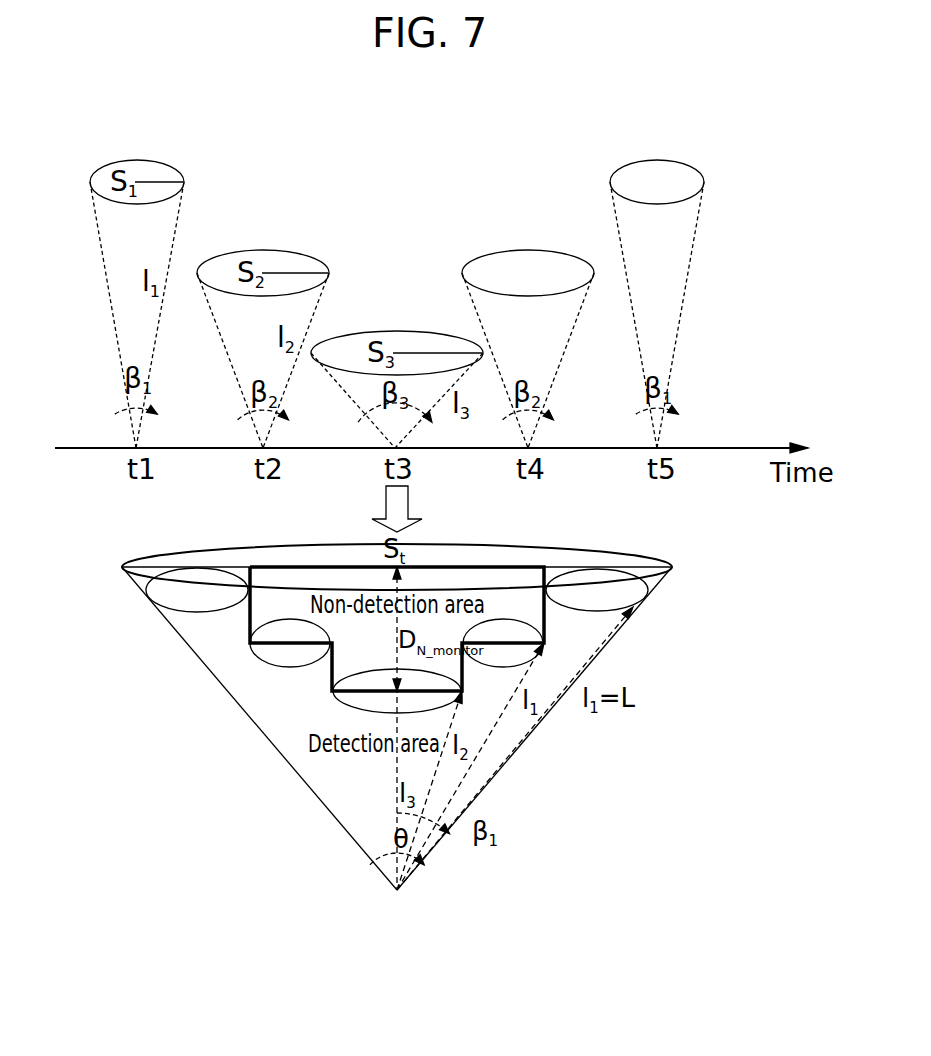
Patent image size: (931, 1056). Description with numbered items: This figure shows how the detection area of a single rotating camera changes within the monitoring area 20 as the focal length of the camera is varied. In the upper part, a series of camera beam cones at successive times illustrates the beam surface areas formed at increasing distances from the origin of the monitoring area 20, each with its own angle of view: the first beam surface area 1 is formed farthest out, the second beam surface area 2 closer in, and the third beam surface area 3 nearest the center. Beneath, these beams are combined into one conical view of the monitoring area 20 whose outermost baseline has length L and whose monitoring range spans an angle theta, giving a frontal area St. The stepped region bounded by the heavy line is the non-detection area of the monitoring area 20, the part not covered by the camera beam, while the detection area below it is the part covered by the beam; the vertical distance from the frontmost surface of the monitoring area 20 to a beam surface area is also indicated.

The monitoring area 20 is at (456, 575).
The first scan area S1 1 is at (397, 590).
The second scan area S2 2 is at (396, 640).
The third scan area S3 3 is at (397, 685).